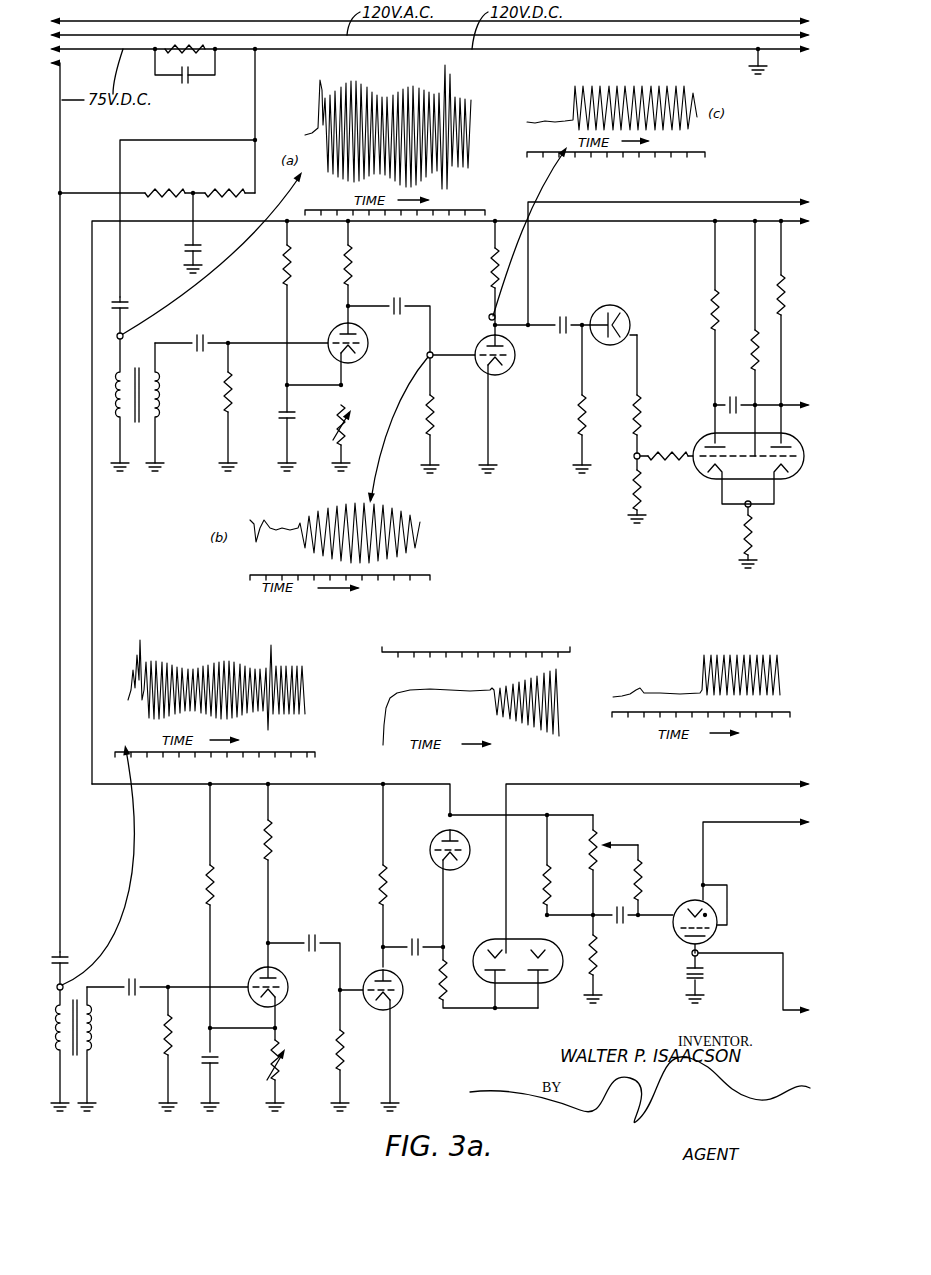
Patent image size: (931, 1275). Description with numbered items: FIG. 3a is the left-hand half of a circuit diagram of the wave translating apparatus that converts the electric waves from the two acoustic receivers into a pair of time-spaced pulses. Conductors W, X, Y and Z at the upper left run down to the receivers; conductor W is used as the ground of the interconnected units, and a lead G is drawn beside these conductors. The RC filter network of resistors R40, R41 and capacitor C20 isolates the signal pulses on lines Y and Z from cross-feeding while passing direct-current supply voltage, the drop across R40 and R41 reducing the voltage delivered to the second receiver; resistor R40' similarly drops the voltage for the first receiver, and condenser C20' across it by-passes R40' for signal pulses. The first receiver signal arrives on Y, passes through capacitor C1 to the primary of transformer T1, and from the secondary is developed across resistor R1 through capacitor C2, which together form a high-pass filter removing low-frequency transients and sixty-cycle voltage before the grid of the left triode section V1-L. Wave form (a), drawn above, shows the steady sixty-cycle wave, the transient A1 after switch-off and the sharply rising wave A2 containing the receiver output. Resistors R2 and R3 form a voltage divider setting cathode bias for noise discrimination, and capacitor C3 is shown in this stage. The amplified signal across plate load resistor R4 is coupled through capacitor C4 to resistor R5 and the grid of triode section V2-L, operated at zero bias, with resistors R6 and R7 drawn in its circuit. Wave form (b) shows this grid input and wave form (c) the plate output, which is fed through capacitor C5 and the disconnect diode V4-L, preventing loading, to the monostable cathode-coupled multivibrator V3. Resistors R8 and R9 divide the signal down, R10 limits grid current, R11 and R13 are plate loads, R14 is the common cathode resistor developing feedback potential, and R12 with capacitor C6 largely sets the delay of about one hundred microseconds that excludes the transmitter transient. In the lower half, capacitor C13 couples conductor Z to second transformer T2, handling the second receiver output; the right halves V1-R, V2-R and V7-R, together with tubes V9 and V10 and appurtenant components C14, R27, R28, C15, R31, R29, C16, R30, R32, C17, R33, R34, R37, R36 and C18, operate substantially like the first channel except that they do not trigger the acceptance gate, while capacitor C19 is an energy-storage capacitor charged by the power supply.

The conductor W is at (419, 22).
The conductor X is at (419, 36).
The conductor Y is at (420, 58).
The conductor Z is at (44, 504).
The ground bus G is at (273, 21).
The resistor R40' is at (185, 57).
The condenser C20' is at (185, 76).
The resistor R40 is at (165, 183).
The resistor R41 is at (225, 183).
The capacitor C20 is at (207, 233).
The capacitor C1 is at (130, 318).
The transformer T1 is at (137, 405).
The capacitor C2 is at (241, 335).
The resistor R1 is at (218, 407).
The resistor R2 is at (272, 316).
The capacitor C3 is at (275, 441).
The plate load resistor R4 is at (330, 272).
The left triode section V1-L is at (345, 355).
The resistor R3 is at (352, 438).
The capacitor C4 is at (411, 321).
The resistor R5 is at (441, 415).
The resistor R6 is at (476, 278).
The first triode section V2-L is at (501, 404).
The capacitor C5 is at (542, 316).
The disconnect diode V4-L is at (613, 312).
The resistor R7 is at (569, 399).
The resistor R8 is at (622, 397).
The resistor R9 is at (626, 491).
The grid current limiting resistor R10 is at (666, 445).
The plate load resistor R11 is at (695, 332).
The resistor R12 is at (740, 338).
The plate load resistor R13 is at (796, 332).
The capacitor C6 is at (748, 397).
The mono-stable cathode-coupled multivibrator V3 is at (748, 470).
The common cathode resistor R14 is at (762, 537).
The transient wave A1 is at (301, 129).
The sharply rising wave A2 is at (317, 81).
The capacitor C13 is at (75, 971).
The second transformer T2 is at (83, 1049).
The capacitor C14 is at (167, 979).
The resistor R27 is at (182, 1049).
The resistor R28 is at (227, 918).
The capacitor C15 is at (224, 1082).
The resistor R31 is at (286, 875).
The right half of amplifier tube V1-R is at (266, 998).
The variable resistor R29 is at (289, 1069).
The capacitor C16 is at (315, 975).
The resistor R30 is at (354, 1070).
The resistor R32 is at (400, 875).
The right half of second tube V2-R is at (397, 1040).
The capacitor C17 is at (414, 939).
The right half of tube V7 V7-R is at (463, 895).
The resistor R33 is at (488, 985).
The tube V9 is at (518, 963).
The resistor R34 is at (562, 866).
The resistor R37 is at (633, 881).
The resistor R36 is at (608, 959).
The capacitor C18 is at (610, 926).
The tube V10 is at (741, 916).
The capacitor C19 is at (712, 979).